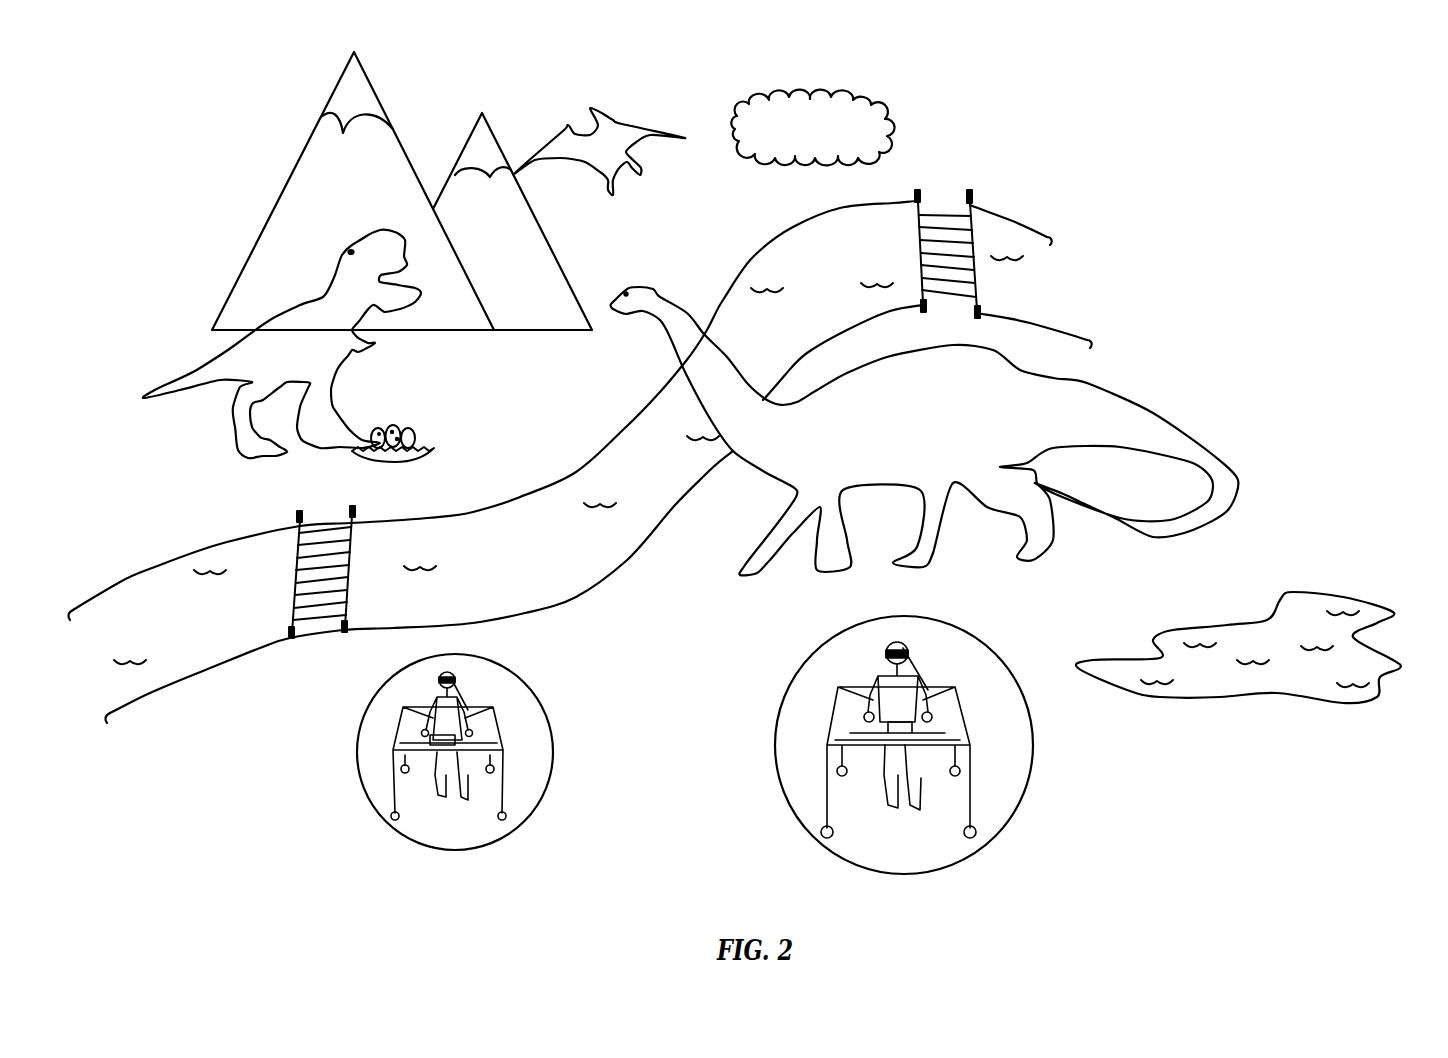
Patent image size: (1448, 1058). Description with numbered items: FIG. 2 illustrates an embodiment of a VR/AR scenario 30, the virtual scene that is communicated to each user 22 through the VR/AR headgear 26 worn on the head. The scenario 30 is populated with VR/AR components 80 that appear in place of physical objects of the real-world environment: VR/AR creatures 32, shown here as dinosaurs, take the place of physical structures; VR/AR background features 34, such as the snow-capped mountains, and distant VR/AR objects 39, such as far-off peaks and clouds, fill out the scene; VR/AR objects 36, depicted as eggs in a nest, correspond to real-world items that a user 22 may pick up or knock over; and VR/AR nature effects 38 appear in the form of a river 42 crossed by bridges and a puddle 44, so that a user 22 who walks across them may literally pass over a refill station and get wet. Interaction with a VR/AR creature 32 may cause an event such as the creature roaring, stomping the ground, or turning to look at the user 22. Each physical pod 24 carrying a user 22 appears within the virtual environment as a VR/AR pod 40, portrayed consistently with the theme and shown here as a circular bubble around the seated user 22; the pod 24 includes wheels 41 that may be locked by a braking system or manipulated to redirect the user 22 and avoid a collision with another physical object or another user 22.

The user 22 is at (440, 665).
The pod 24 is at (504, 788).
The VR/AR headgear 26 is at (452, 680).
The VR/AR scenario 30 is at (639, 631).
The VR/AR creature 32 is at (282, 312).
The VR/AR background feature 34 is at (397, 130).
The VR/AR object 36 is at (407, 428).
The VR/AR nature effect 38 is at (588, 463).
The distant VR/AR object 39 is at (370, 84).
The VR/AR pod 40 is at (537, 690).
The wheels 41 is at (397, 818).
The river 42 is at (518, 498).
The puddle 44 is at (1393, 610).
The VR/AR component 80 is at (450, 88).